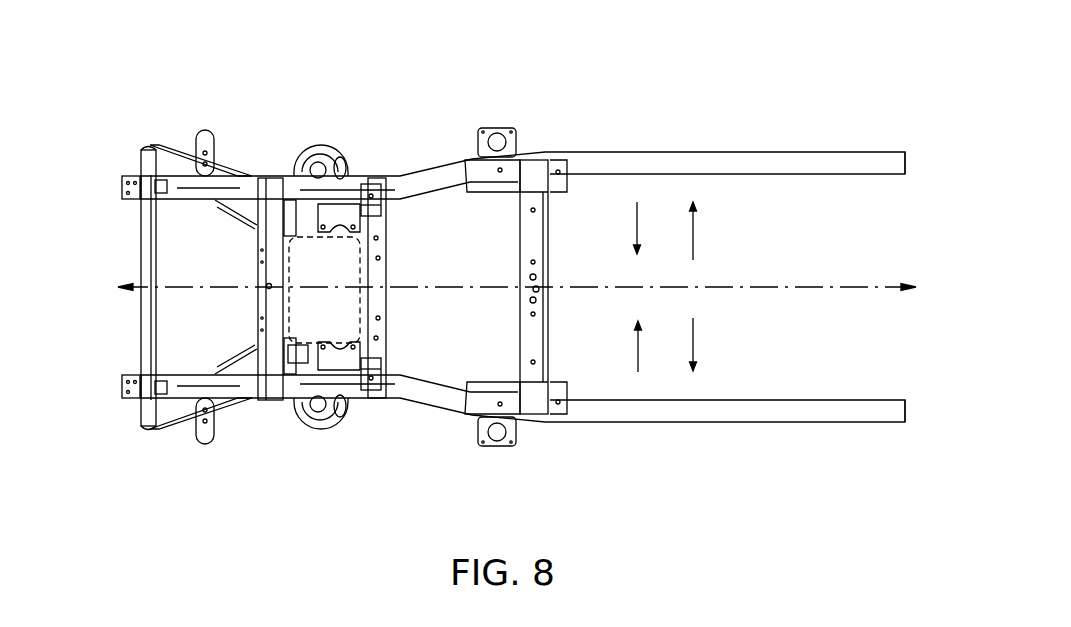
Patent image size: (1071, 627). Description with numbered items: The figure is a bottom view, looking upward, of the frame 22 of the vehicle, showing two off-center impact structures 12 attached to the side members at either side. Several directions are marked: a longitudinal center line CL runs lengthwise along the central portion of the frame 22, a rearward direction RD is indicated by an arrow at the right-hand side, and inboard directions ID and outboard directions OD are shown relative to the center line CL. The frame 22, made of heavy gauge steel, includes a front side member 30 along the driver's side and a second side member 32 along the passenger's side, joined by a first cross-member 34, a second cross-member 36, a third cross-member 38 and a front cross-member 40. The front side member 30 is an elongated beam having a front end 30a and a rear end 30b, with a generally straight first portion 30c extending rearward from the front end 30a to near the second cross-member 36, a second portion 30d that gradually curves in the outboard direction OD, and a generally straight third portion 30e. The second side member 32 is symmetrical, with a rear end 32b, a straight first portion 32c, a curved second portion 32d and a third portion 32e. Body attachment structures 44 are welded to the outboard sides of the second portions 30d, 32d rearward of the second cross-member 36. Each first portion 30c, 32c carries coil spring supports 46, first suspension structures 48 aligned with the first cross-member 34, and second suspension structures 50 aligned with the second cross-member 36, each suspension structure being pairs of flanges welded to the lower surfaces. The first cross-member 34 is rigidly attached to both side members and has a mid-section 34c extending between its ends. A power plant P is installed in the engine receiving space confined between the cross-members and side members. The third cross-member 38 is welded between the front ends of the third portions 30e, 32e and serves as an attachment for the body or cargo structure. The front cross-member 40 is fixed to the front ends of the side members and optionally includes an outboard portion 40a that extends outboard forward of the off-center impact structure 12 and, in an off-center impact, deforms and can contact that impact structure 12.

The off-center impact structure 12 is at (171, 154).
The frame 22 is at (600, 57).
The front side member 30 is at (402, 170).
The front end 30a is at (125, 188).
The rear end 30b is at (907, 164).
The first portion 30c is at (372, 98).
The second portion 30d is at (528, 113).
The third portion 30e is at (905, 108).
The second side member 32 is at (403, 406).
The rear end 32b is at (907, 410).
The first portion 32c is at (372, 483).
The second portion 32d is at (528, 466).
The third portion 32e is at (905, 466).
The first cross-member 34 is at (267, 280).
The mid-section 34c is at (272, 258).
The second cross-member 36 is at (380, 313).
The third cross-member 38 is at (532, 237).
The front cross-member 40 is at (157, 303).
The outboard portion 40a is at (147, 170).
The body attachment structure 44 is at (480, 147).
The coil spring support 46 is at (308, 160).
The first suspension structure 48 is at (279, 205).
The second suspension structure 50 is at (372, 184).
The power plant P is at (270, 313).
The inboard direction ID is at (636, 351).
The outboard direction OD is at (694, 240).
The longitudinal center line CL is at (797, 286).
The rearward direction RD is at (877, 288).